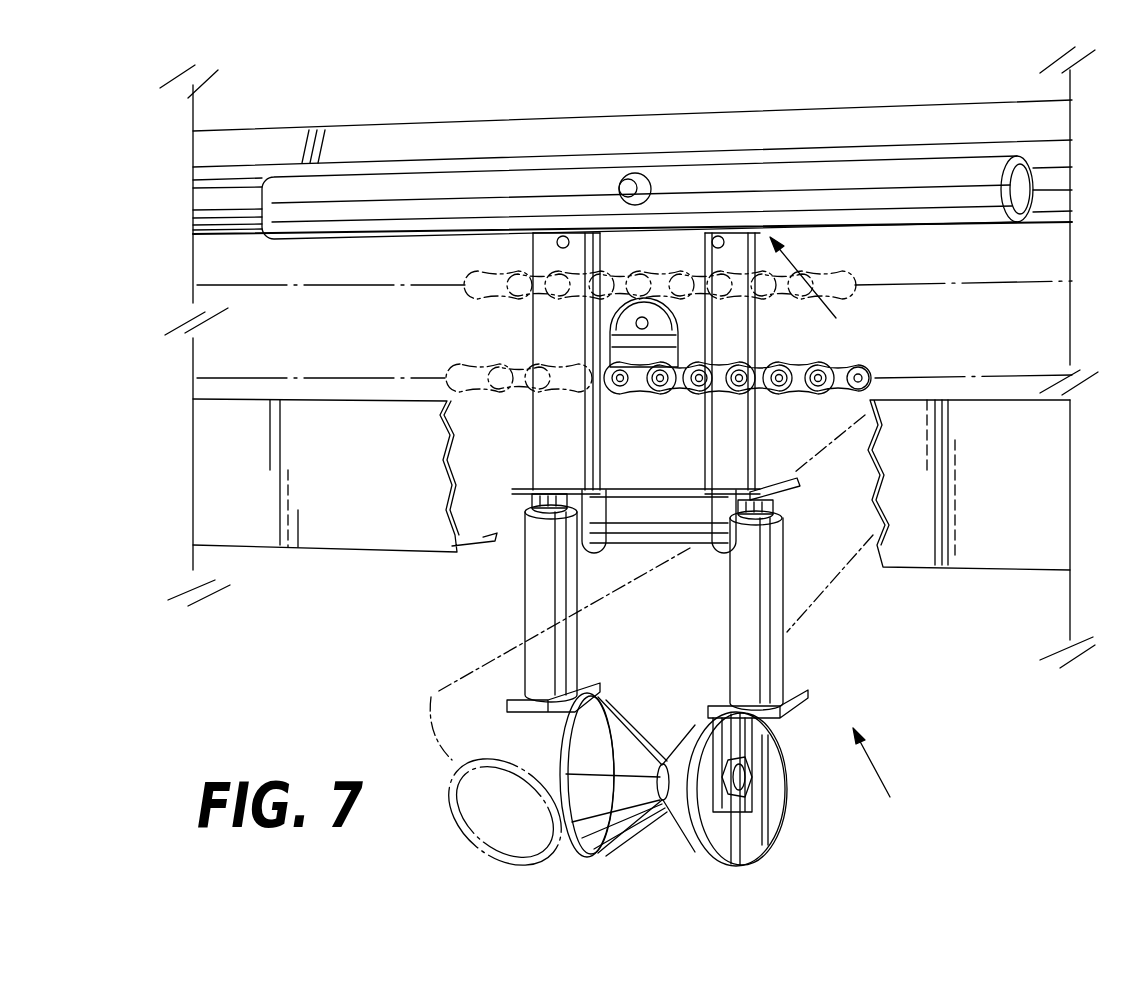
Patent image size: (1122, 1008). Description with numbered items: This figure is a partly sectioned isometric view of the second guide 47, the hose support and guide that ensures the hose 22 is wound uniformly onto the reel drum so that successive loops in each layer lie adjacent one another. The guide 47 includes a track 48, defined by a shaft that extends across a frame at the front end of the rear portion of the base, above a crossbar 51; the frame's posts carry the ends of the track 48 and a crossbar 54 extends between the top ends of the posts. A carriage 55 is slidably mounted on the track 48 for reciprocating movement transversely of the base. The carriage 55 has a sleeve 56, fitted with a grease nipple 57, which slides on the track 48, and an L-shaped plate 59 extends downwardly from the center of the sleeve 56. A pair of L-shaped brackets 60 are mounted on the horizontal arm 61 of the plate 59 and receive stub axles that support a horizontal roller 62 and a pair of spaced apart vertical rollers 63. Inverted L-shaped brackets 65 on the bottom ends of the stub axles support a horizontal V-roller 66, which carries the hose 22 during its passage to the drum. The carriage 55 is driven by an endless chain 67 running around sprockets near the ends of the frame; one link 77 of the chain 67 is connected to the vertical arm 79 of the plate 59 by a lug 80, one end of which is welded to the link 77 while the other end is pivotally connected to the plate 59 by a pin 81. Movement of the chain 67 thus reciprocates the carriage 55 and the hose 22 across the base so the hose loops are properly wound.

The hose 22 is at (430, 700).
The second guide 47 is at (891, 781).
The track 48 is at (240, 200).
The crossbar 51 is at (960, 552).
The crossbar 54 is at (897, 127).
The carriage 55 is at (818, 297).
The sleeve 56 is at (720, 190).
The grease nipple 57 is at (630, 178).
The L-shaped plate 59 is at (533, 328).
The L-shaped brackets 60 is at (520, 488).
The horizontal arm 61 is at (778, 476).
The horizontal roller 62 is at (657, 545).
The vertical rollers 63 is at (535, 578).
The inverted L-shaped brackets 65 is at (512, 701).
The horizontal V-roller 66 is at (640, 837).
The endless chain 67 is at (867, 370).
The link 77 is at (648, 392).
The vertical arm 79 is at (597, 240).
The lug 80 is at (660, 300).
The pin 81 is at (648, 325).